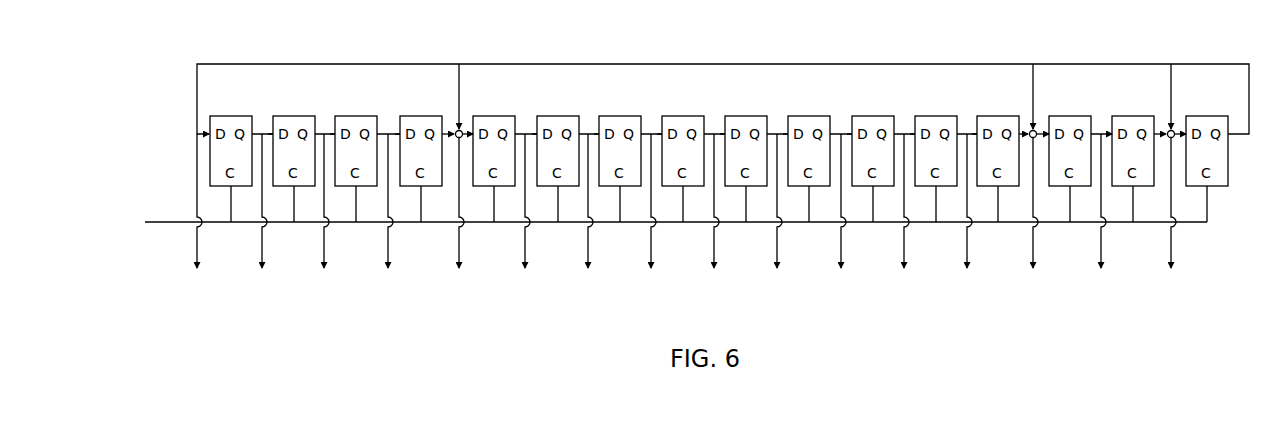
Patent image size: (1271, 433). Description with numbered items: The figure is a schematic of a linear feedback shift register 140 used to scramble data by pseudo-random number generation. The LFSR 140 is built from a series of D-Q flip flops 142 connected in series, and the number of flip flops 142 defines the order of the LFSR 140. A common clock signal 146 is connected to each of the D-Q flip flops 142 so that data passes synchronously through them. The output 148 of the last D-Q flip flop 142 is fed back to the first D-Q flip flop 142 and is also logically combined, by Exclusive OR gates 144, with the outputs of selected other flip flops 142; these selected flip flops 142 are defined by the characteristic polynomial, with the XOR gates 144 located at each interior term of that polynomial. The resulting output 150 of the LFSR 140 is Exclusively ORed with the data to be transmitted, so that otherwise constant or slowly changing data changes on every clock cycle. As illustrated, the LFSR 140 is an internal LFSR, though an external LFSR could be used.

The linear feedback shift register 140 is at (178, 166).
The D-Q flip flop 142 is at (415, 116).
The Exclusive OR gate 144 is at (456, 131).
The common clock signal 146 is at (567, 224).
The output of the last D-Q flip flop 148 is at (708, 64).
The output of the LFSR 150 is at (178, 251).